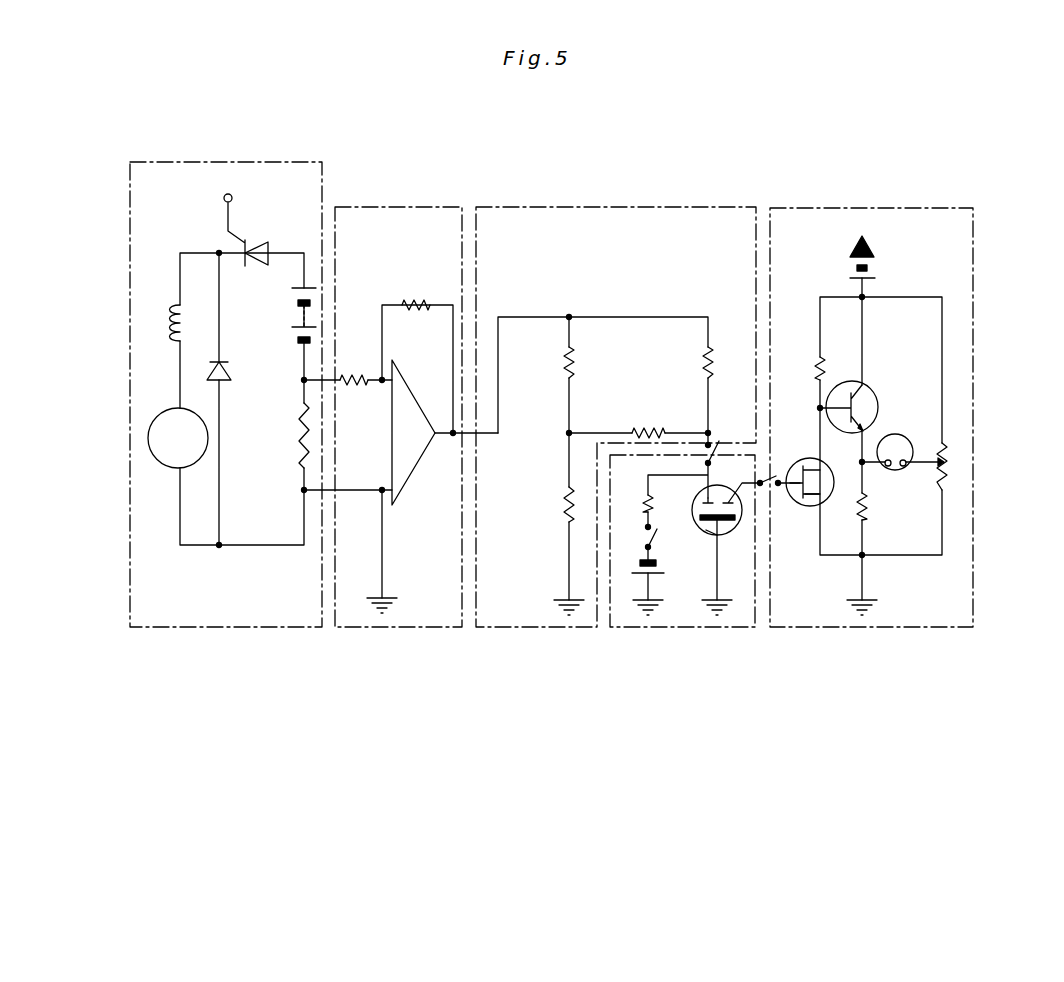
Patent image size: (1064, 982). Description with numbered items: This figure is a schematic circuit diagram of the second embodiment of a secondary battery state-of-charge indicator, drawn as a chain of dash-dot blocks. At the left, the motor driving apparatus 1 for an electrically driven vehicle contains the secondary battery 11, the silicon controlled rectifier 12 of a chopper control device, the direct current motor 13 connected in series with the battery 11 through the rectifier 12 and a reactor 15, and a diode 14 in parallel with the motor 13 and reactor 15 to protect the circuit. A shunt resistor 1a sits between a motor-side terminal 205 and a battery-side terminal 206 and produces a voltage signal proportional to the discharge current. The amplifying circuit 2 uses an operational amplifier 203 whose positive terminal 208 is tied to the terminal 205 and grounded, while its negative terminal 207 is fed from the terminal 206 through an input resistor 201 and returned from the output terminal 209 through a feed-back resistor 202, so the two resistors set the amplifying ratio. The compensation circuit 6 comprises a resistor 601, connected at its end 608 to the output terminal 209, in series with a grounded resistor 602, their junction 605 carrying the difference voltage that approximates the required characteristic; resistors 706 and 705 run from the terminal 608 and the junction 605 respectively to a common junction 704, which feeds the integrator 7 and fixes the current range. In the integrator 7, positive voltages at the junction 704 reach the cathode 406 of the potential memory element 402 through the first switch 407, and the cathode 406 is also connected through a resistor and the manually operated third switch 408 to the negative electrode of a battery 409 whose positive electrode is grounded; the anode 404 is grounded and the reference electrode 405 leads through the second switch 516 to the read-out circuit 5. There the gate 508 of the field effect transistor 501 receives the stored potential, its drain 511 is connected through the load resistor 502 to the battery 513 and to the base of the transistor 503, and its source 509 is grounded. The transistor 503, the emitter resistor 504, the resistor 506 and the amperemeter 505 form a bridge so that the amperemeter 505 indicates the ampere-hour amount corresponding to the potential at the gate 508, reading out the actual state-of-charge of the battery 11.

The motor driving apparatus 1 is at (223, 161).
The shunt resistor 1a is at (300, 432).
The amplifying circuit 2 is at (389, 206).
The read-out circuit 5 is at (868, 207).
The compensation circuit 6 is at (557, 206).
The integrator 7 is at (712, 628).
The secondary battery 11 is at (298, 304).
The silicon controlled rectifier 12 is at (250, 247).
The direct current motor 13 is at (160, 458).
The diode 14 is at (226, 371).
The reactor 15 is at (173, 328).
The input resistor 201 is at (352, 376).
The feed-back resistor 202 is at (416, 300).
The operational amplifier 203 is at (408, 394).
The terminal 205 is at (302, 490).
The terminal 206 is at (302, 378).
The negative terminal 207 is at (382, 384).
The positive terminal 208 is at (381, 488).
The output terminal 209 is at (452, 438).
The resistor 601 is at (565, 368).
The resistor 602 is at (565, 505).
The junction 605 is at (565, 436).
The terminal 608 is at (567, 315).
The junction 704 is at (711, 440).
The resistor 705 is at (704, 372).
The resistor 706 is at (652, 430).
The potential memory element 402 is at (714, 530).
The anode 404 is at (703, 534).
The reference electrode 405 is at (730, 494).
The cathode 406 is at (702, 495).
The first switch 407 is at (712, 458).
The third switch 408 is at (650, 545).
The battery 409 is at (652, 575).
The field effect transistor 501 is at (830, 470).
The load resistor 502 is at (815, 364).
The transistor 503 is at (866, 396).
The emitter resistor 504 is at (868, 505).
The amperemeter 505 is at (900, 435).
The resistor 506 is at (950, 470).
The gate 508 is at (792, 504).
The source 509 is at (820, 508).
The drain 511 is at (818, 438).
The battery 513 is at (874, 277).
The second switch 516 is at (770, 478).